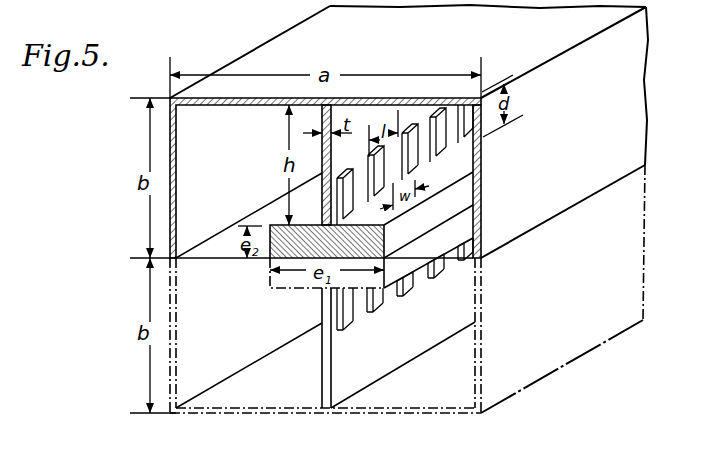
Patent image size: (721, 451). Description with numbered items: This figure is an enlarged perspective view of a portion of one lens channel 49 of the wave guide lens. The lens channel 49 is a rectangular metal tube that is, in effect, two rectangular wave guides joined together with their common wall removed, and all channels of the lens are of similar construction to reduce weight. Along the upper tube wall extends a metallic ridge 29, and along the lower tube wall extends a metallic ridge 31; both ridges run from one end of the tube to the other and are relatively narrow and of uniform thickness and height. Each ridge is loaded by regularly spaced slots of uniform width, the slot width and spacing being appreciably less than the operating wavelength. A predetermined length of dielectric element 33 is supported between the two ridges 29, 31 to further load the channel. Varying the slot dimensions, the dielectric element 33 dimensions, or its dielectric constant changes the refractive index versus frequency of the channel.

The metallic ridge 29 is at (321, 148).
The metallic ridge 31 is at (321, 371).
The dielectric element 33 is at (270, 224).
The lens channel 49 is at (205, 192).